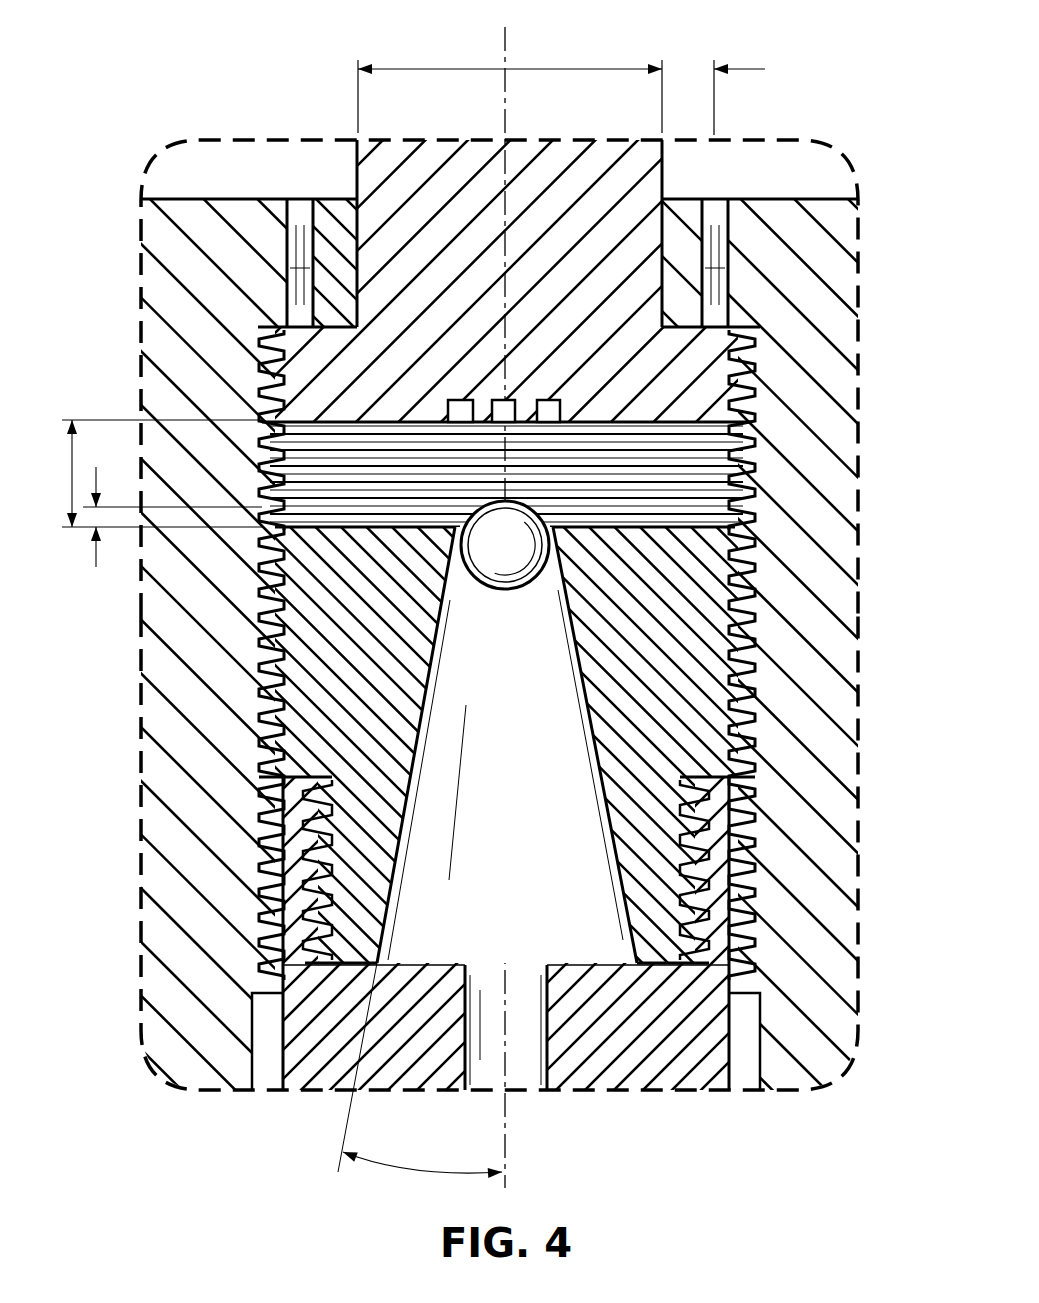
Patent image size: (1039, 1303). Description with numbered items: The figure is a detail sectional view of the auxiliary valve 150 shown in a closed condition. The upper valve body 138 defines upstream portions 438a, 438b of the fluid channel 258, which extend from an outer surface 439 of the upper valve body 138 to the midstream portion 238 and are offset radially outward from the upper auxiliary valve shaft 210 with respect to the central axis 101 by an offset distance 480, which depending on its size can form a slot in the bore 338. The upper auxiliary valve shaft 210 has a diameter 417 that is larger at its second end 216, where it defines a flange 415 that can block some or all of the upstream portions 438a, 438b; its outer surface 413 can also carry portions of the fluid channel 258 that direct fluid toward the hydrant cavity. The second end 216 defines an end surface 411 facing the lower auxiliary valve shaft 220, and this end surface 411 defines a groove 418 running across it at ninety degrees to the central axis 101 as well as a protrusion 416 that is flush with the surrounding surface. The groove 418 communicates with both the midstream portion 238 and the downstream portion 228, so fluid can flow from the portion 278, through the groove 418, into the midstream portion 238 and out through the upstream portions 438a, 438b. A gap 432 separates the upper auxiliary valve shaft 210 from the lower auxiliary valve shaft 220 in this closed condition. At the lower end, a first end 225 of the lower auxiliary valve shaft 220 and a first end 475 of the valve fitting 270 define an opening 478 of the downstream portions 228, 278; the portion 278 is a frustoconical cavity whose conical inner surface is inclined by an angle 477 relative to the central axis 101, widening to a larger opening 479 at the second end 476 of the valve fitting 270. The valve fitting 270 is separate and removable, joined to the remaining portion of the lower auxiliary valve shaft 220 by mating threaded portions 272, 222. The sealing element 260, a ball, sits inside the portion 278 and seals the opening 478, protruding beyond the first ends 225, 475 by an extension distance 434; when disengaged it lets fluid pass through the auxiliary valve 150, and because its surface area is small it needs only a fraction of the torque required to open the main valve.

The auxiliary valve 150 is at (203, 86).
The upper valve body 138 is at (160, 1048).
The outer surface of the upper valve body 439 is at (216, 194).
The upstream portion 438a is at (287, 263).
The upstream portion 438b is at (730, 260).
The upper auxiliary valve shaft 210 is at (612, 138).
The outer surface of the upper auxiliary valve shaft 413 is at (352, 171).
The offset distance 480 is at (688, 75).
The diameter 417 is at (470, 68).
The central axis 101 is at (505, 48).
The bore 338 is at (663, 137).
The flange 415 is at (750, 358).
The midstream portion 238 is at (735, 452).
The second end 216 is at (376, 424).
The end surface 411 is at (339, 430).
The groove 418 is at (435, 430).
The protrusion 416 is at (492, 442).
The gap 432 is at (70, 472).
The extension distance 434 is at (97, 562).
The first end of the lower auxiliary valve shaft 225 is at (519, 651).
The first end of the valve fitting 475 is at (734, 600).
The valve fitting 270 is at (762, 602).
The portion of the fluid channel 278 is at (607, 813).
The second end or opening 479 is at (383, 988).
The sealing element 260 is at (521, 590).
The first end or opening 478 is at (549, 522).
The threaded portion 272 is at (262, 792).
The threaded portion 222 is at (314, 773).
The lower auxiliary valve shaft 220 is at (663, 1060).
The second end of the valve fitting 476 is at (657, 967).
The downstream portion 228 is at (561, 1065).
The fluid channel 258 is at (536, 1092).
The angle 477 is at (425, 1172).